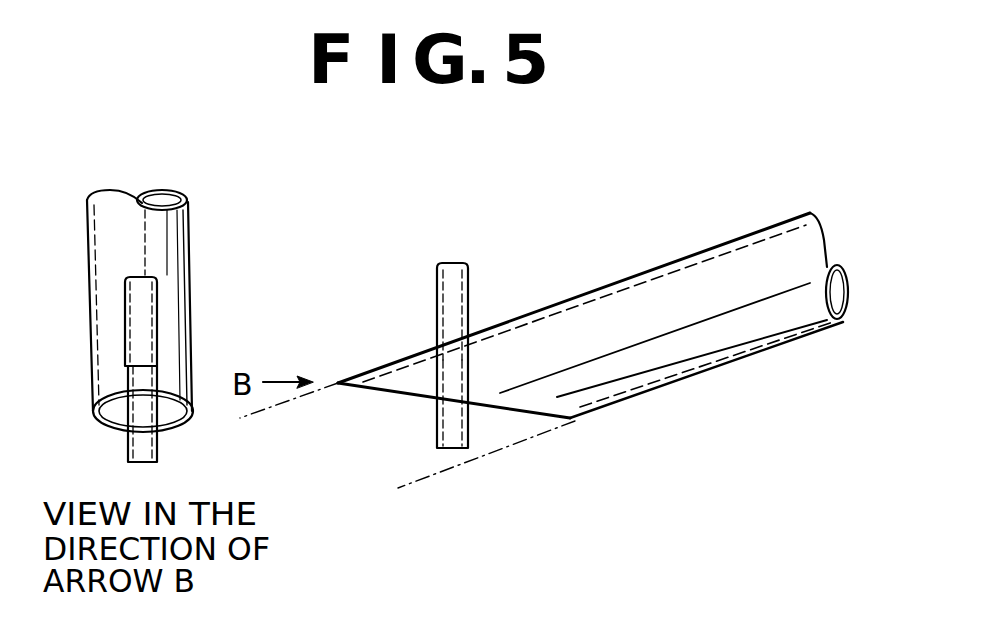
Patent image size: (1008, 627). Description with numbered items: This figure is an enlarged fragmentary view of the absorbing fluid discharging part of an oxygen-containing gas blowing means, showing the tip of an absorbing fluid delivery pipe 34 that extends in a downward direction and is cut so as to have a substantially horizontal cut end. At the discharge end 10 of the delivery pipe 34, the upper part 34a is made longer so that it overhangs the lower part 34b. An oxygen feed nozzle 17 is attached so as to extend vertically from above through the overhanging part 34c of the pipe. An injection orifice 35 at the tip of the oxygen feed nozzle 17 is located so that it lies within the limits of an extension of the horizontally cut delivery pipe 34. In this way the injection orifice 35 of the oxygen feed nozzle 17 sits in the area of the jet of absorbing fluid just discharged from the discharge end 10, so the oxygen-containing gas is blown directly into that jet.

The discharge end 10 is at (100, 417).
The oxygen feed nozzle 17 is at (437, 297).
The absorbing fluid delivery pipe 34 is at (100, 414).
The upper part 34a is at (338, 383).
The lower part 34b is at (577, 420).
The overhanging part 34c is at (575, 297).
The injection orifice 35 is at (150, 462).